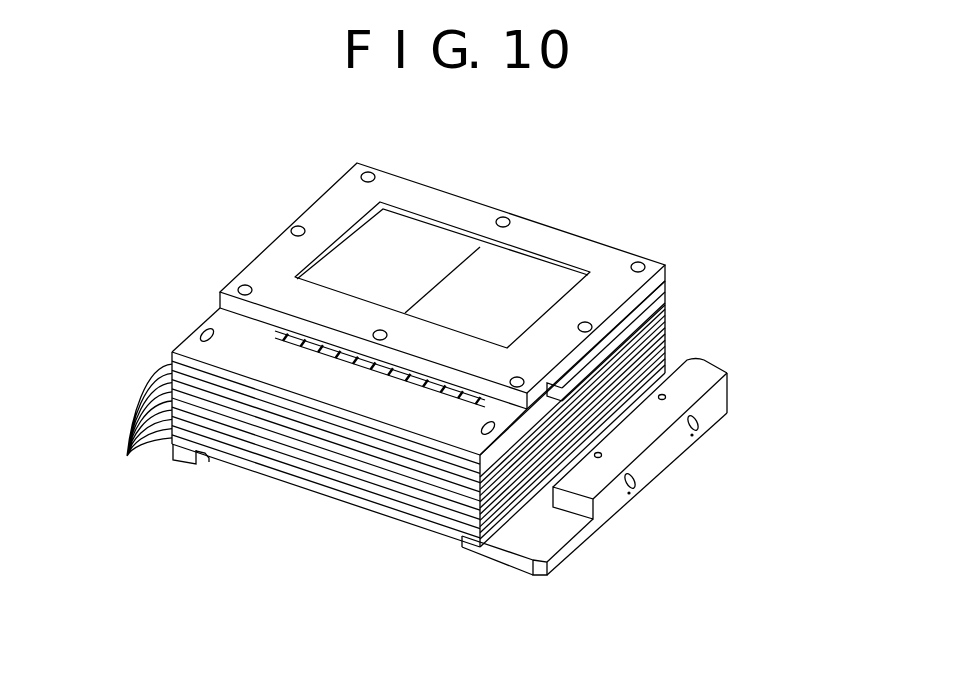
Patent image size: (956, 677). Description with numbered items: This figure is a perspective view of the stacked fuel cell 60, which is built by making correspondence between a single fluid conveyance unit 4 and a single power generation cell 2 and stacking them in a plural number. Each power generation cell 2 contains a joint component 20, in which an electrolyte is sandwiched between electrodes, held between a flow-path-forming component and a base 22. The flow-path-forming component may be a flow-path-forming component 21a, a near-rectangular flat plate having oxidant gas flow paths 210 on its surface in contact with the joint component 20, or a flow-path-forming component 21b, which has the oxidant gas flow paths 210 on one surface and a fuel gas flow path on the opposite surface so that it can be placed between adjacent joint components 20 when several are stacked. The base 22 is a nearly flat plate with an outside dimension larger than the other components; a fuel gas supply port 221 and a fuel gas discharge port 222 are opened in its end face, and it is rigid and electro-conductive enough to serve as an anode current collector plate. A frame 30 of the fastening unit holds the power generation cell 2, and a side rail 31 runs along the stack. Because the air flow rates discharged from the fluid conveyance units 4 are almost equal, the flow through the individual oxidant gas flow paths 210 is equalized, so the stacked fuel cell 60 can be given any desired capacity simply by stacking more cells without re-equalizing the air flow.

The power generation cell 2 is at (781, 411).
The fluid conveyance unit 4 is at (292, 449).
The joint component 20 is at (527, 433).
The flow-path-forming component 21a is at (668, 288).
The flow-path-forming component 21b is at (666, 288).
The base 22 is at (650, 431).
The frame 30 is at (410, 193).
The side rail 31 is at (646, 300).
The stacked fuel cell 60 is at (622, 204).
The oxidant gas flow paths 210 is at (277, 327).
The fuel gas supply port 221 is at (700, 426).
The fuel gas discharge port 222 is at (636, 487).